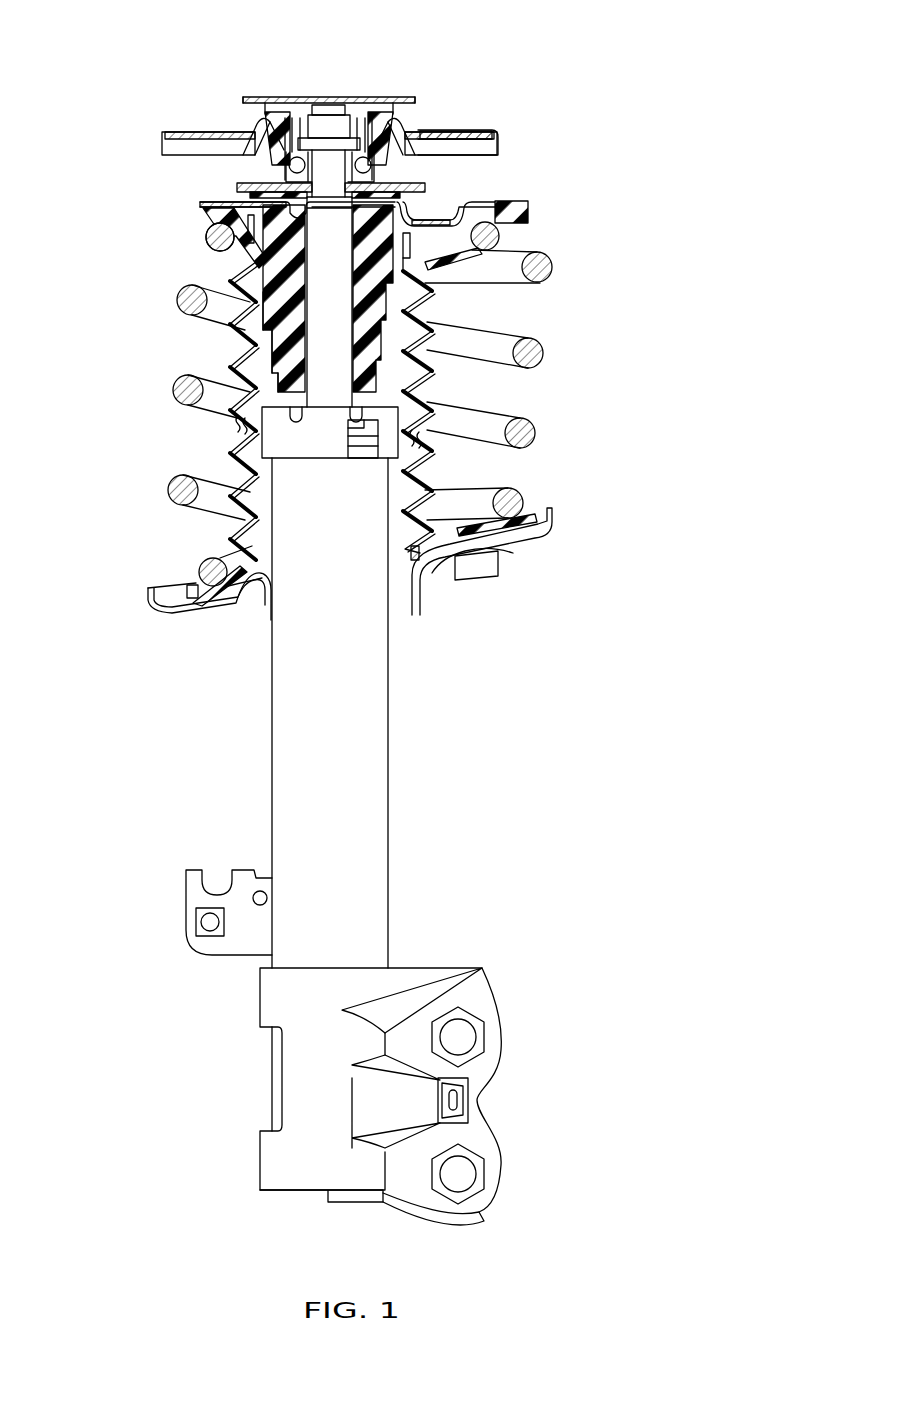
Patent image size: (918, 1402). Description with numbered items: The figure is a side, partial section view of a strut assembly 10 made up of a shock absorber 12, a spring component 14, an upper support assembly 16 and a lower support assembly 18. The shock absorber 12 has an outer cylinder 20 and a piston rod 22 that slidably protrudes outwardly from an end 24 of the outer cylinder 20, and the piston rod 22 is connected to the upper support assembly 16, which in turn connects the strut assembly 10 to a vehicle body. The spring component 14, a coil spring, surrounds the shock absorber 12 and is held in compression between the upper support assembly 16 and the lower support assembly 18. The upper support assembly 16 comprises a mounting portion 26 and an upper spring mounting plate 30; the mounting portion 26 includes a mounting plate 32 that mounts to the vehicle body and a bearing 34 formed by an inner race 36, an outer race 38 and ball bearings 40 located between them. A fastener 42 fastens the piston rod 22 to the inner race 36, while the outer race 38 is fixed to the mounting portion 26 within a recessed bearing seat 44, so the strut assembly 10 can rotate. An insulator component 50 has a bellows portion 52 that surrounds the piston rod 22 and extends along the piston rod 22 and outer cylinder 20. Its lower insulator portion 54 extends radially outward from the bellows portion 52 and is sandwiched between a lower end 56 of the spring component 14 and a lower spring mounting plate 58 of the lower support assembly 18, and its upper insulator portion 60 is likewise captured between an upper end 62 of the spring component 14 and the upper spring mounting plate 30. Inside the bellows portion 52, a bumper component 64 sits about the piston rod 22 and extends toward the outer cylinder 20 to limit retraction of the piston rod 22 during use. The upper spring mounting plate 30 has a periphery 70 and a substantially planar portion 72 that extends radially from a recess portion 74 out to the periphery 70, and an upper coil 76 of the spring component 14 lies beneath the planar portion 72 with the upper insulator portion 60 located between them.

The strut assembly 10 is at (648, 132).
The shock absorber 12 is at (416, 753).
The spring component 14 is at (571, 348).
The upper support assembly 16 is at (158, 178).
The lower support assembly 18 is at (136, 608).
The outer cylinder 20 is at (285, 770).
The piston rod 22 is at (300, 294).
The end 24 is at (330, 404).
The mounting portion 26 is at (366, 76).
The upper spring mounting plate 30 is at (240, 190).
The mounting plate 32 is at (262, 97).
The bearing 34 is at (420, 133).
The inner race 36 is at (298, 154).
The outer race 38 is at (290, 164).
The ball bearings 40 is at (370, 165).
The fastener 42 is at (352, 128).
The recessed bearing seat 44 is at (280, 173).
The insulator component 50 is at (449, 302).
The bellows portion 52 is at (240, 440).
The lower insulator portion 54 is at (535, 518).
The lower end 56 is at (512, 534).
The lower spring mounting plate 58 is at (256, 600).
The upper insulator portion 60 is at (206, 232).
The upper end 62 is at (497, 226).
The bumper component 64 is at (265, 340).
The periphery 70 is at (200, 205).
The planar portion 72 is at (470, 205).
The recess portion 74 is at (458, 203).
The upper coil 76 is at (506, 236).